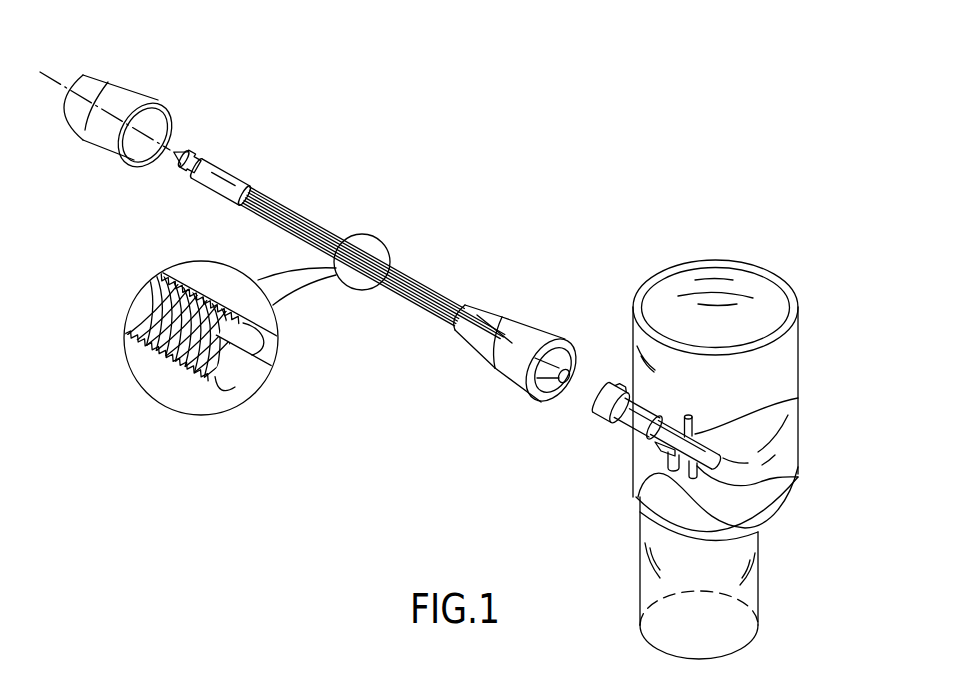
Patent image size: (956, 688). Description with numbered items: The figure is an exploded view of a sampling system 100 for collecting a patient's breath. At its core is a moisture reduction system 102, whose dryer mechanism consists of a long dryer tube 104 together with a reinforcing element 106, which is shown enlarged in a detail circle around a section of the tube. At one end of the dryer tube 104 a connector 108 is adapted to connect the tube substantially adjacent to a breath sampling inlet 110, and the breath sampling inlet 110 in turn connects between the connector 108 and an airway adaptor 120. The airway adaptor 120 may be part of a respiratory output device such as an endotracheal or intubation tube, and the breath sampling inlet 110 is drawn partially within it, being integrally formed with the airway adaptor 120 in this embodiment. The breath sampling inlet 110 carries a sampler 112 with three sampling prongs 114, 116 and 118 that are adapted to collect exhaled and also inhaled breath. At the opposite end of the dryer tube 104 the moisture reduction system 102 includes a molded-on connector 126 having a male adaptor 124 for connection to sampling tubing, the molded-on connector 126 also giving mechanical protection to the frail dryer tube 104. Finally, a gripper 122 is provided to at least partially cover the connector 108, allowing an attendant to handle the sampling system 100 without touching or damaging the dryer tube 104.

The sampling system 100 is at (458, 253).
The moisture reduction system 102 is at (412, 244).
The dryer tube 104 is at (254, 374).
The reinforcing element 106 is at (155, 365).
The connector 108 is at (542, 319).
The breath sampling inlet 110 is at (605, 430).
The sampler 112 is at (768, 477).
The sampling prong 114 is at (787, 400).
The sampling prong 116 is at (758, 532).
The sampling prong 118 is at (638, 498).
The airway adaptor 120 is at (808, 326).
The gripper 122 is at (125, 93).
The male adaptor 124 is at (187, 137).
The molded-on connector 126 is at (234, 164).